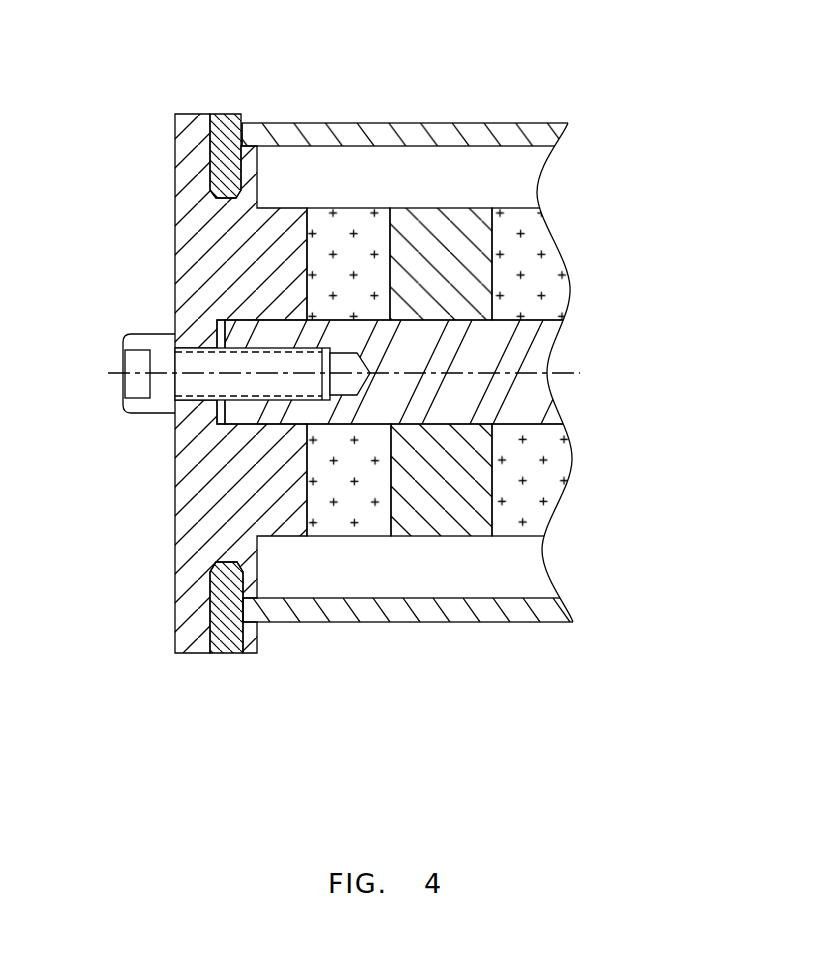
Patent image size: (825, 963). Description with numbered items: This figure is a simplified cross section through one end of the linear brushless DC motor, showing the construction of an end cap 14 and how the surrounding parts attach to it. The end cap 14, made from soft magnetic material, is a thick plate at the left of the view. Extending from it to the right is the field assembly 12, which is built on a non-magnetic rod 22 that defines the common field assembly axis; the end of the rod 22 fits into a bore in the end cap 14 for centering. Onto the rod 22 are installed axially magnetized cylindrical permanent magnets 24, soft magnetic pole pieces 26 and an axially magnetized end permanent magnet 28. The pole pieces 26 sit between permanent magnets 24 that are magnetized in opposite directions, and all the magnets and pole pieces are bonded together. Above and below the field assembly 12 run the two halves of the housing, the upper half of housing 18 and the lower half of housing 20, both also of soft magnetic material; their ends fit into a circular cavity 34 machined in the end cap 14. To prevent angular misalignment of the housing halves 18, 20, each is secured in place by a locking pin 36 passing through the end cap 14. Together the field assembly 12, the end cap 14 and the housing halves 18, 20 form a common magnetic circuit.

The field assembly 12 is at (548, 355).
The end cap 14 is at (173, 233).
The upper half of housing 18 is at (438, 123).
The lower half of housing 20 is at (440, 622).
The non-magnetic rod 22 is at (537, 403).
The cylindrical permanent magnet 24 is at (545, 483).
The soft magnetic pole piece 26 is at (408, 220).
The end permanent magnet 28 is at (323, 220).
The circular cavity 34 is at (259, 124).
The locking pin 36 is at (182, 728).